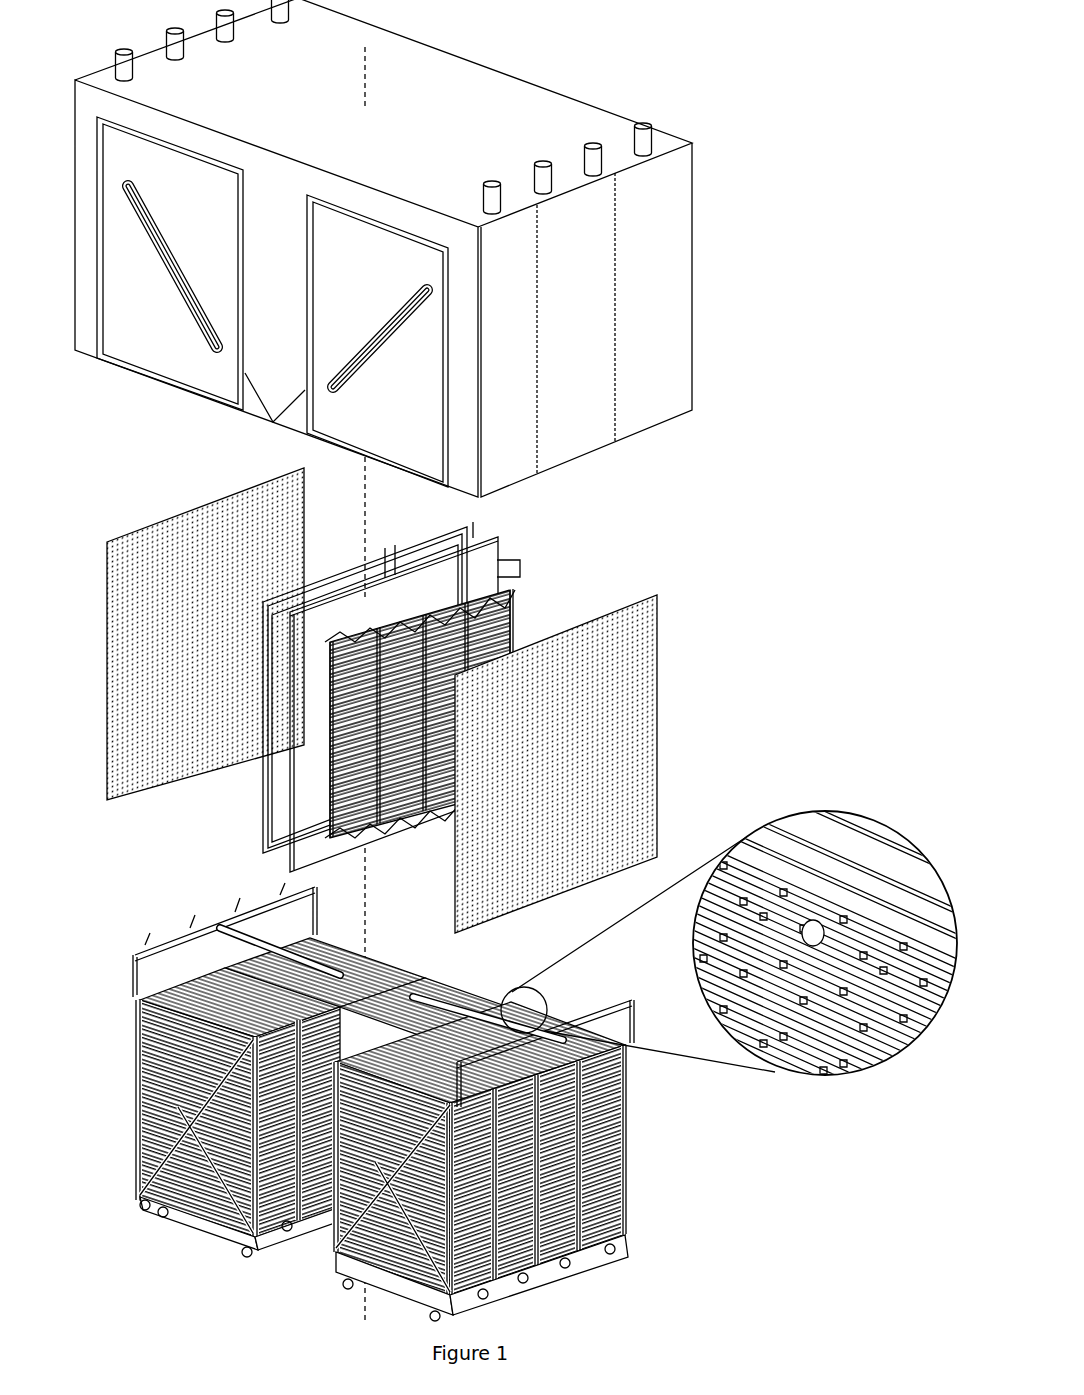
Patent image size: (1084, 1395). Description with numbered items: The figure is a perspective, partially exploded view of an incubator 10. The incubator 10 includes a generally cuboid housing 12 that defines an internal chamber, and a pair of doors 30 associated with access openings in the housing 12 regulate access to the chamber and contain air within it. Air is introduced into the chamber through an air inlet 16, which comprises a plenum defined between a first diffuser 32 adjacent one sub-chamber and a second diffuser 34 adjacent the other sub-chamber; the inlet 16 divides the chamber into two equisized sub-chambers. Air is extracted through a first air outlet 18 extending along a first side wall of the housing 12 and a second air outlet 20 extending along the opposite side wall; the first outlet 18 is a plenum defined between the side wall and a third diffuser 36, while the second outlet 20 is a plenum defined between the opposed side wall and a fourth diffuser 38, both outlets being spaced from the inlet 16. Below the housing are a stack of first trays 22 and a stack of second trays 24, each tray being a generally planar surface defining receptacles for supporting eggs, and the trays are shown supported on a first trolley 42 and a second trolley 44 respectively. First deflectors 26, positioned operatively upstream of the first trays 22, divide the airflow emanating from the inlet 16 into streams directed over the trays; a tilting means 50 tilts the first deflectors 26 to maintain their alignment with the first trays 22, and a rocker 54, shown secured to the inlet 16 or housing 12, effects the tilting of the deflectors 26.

The incubator 10 is at (660, 70).
The housing 12 is at (668, 235).
The air inlet 16 is at (262, 810).
The first air outlet 18 is at (648, 143).
The second air outlet 20 is at (165, 42).
The first trays 22 is at (520, 1159).
The second trays 24 is at (239, 1130).
The first deflectors 26 is at (513, 630).
The doors 30 is at (325, 293).
The first diffuser 32 is at (485, 553).
The second diffuser 34 is at (338, 585).
The third diffuser 36 is at (653, 685).
The fourth diffuser 38 is at (105, 668).
The first trolley 42 is at (517, 1288).
The second trolley 44 is at (262, 1240).
The tilting means 50 is at (413, 612).
The rocker 54 is at (508, 587).